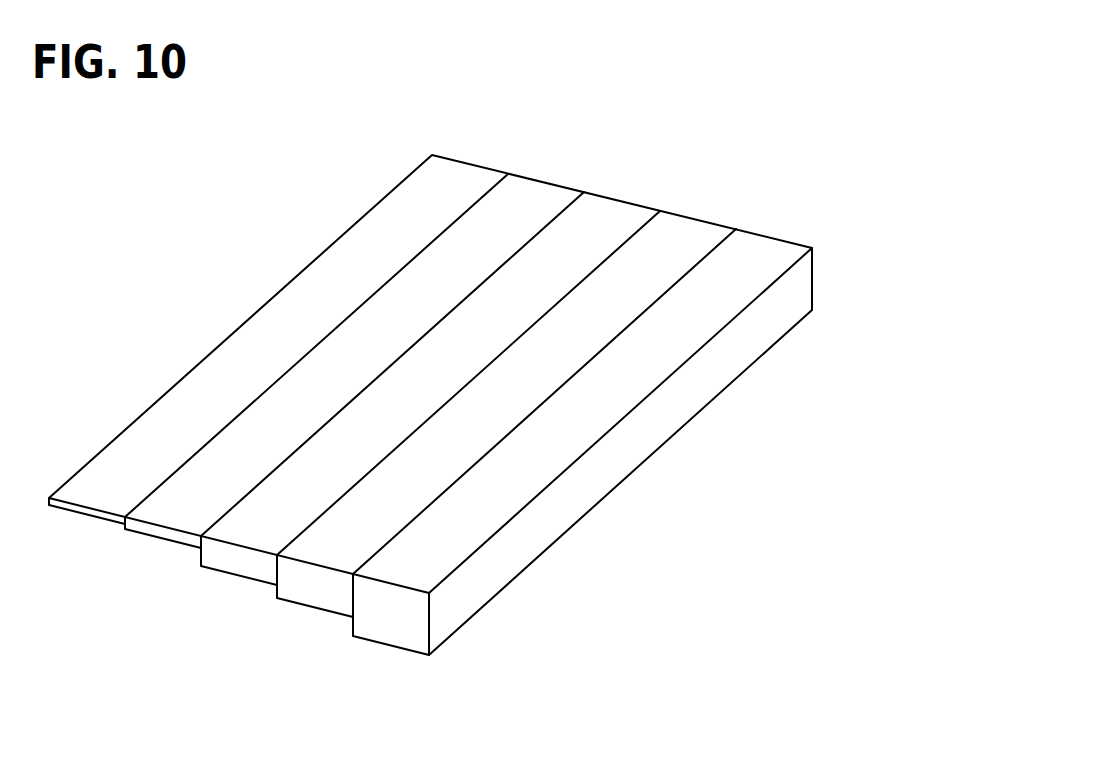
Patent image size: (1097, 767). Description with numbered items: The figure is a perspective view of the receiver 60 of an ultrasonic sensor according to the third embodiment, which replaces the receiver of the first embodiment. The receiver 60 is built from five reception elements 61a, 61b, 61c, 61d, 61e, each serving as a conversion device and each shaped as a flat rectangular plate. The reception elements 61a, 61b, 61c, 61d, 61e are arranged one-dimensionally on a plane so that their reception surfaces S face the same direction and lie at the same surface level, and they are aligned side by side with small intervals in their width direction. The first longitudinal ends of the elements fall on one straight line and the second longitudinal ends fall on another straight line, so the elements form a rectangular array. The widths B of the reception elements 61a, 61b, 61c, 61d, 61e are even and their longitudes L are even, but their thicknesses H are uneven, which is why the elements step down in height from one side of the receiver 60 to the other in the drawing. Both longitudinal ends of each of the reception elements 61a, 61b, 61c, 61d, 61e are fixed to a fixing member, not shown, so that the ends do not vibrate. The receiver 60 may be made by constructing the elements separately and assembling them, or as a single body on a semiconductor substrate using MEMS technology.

The receiver 60 is at (767, 71).
The reception element 61a is at (243, 558).
The reception element 61b is at (313, 590).
The reception element 61c is at (390, 623).
The reception element 61d is at (165, 533).
The reception element 61e is at (85, 513).
The reception surface S is at (257, 350).
The width B is at (840, 225).
The longitude L is at (429, 593).
The thickness H is at (429, 655).